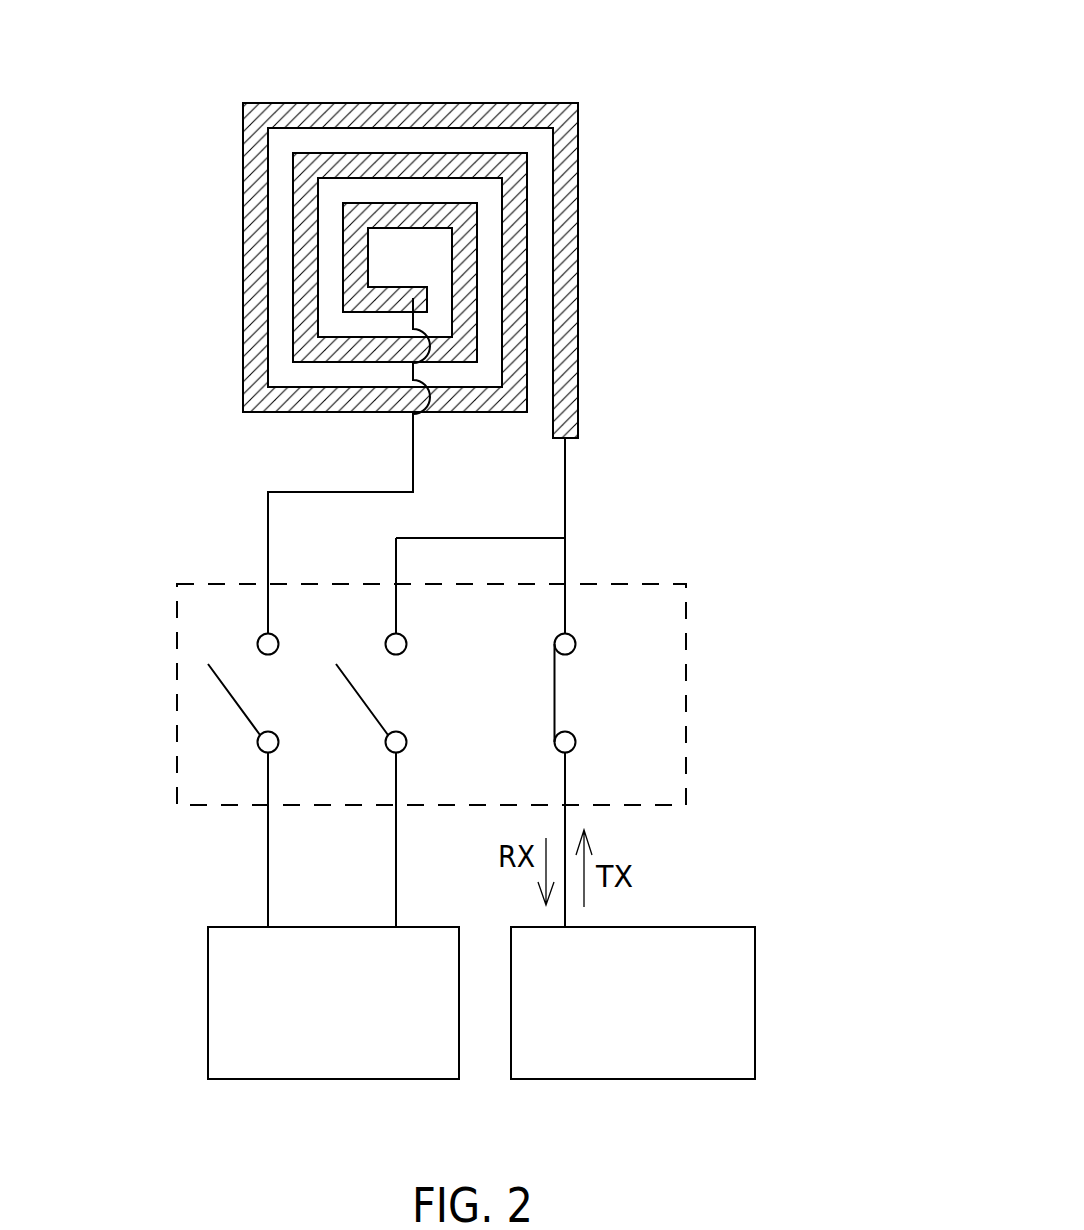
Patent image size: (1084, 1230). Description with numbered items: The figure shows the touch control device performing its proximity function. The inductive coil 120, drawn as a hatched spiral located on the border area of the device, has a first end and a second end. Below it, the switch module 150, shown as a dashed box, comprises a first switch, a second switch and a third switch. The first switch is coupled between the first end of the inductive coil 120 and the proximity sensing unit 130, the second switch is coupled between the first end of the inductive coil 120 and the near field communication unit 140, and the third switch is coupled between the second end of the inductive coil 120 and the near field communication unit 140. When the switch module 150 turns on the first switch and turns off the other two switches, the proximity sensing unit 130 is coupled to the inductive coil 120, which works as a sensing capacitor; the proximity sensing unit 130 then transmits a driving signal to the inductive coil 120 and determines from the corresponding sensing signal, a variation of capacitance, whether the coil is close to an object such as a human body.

The inductive coil 120 is at (642, 92).
The proximity sensing unit 130 is at (755, 1007).
The near field communication unit 140 is at (208, 1012).
The switch module 150 is at (172, 701).